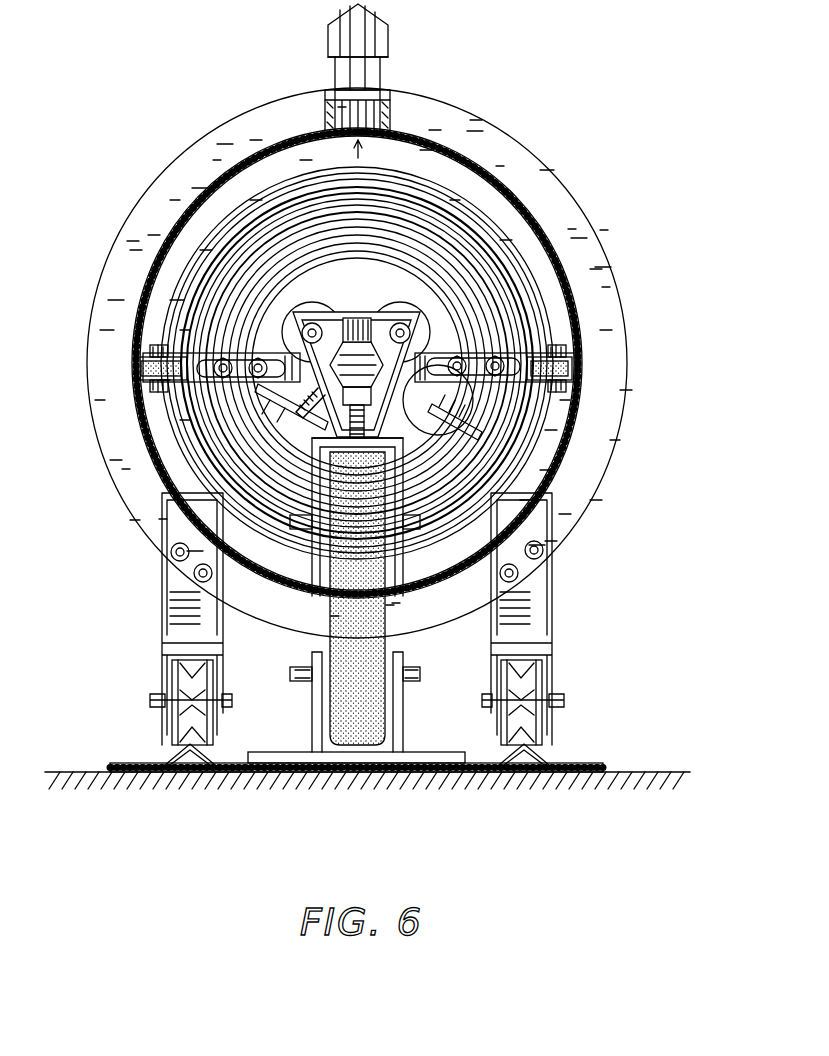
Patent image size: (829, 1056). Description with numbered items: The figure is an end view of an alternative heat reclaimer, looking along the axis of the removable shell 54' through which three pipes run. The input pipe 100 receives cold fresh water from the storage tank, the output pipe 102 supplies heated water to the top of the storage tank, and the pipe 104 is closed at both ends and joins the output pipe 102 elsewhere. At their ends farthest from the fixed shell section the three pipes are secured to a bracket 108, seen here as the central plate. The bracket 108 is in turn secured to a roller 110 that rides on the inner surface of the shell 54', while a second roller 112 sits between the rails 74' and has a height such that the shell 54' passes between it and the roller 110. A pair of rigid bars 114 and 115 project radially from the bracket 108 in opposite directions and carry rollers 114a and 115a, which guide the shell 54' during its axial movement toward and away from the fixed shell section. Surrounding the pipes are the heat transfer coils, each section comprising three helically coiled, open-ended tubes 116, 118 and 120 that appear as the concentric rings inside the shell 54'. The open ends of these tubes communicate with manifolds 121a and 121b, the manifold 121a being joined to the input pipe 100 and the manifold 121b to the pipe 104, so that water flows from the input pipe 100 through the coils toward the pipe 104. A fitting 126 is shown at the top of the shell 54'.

The removable shell 54' is at (309, 363).
The rails 74' is at (369, 629).
The input pipe 100 is at (300, 420).
The output pipe 102 is at (293, 317).
The pipe 104 is at (413, 312).
The bracket 108 is at (353, 310).
The roller 110 is at (337, 572).
The roller 112 is at (376, 712).
The rigid bar 114 is at (183, 387).
The roller 114a is at (138, 365).
The rigid bar 115 is at (523, 352).
The roller 115a is at (572, 366).
The helically coiled tube 116 is at (493, 295).
The helically coiled tube 118 is at (497, 258).
The helically coiled tube 120 is at (470, 203).
The manifold 121a is at (248, 432).
The manifold 121b is at (490, 420).
The vent fitting 126 is at (330, 36).